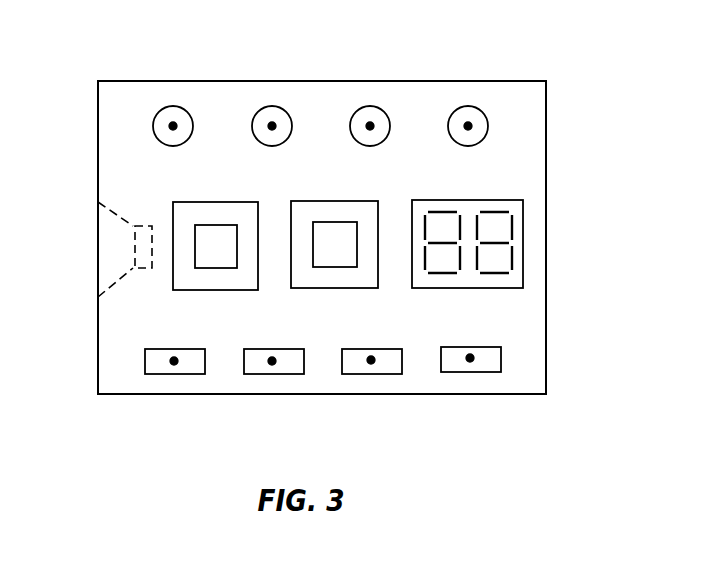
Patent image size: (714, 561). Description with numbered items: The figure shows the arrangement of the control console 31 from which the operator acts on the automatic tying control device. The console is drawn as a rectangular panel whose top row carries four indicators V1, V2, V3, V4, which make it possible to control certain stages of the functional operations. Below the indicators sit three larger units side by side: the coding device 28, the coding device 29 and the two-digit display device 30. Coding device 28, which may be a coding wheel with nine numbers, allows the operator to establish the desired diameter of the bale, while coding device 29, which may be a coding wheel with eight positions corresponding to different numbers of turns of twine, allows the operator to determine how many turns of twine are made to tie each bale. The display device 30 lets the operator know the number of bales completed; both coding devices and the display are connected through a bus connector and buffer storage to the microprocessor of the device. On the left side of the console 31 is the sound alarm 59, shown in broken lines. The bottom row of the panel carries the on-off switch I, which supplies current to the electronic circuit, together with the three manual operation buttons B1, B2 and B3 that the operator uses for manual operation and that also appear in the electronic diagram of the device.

The control console 31 is at (532, 63).
The sound alarm 59 is at (108, 228).
The coding device 28 is at (237, 204).
The coding device 29 is at (343, 208).
The two-digit display device 30 is at (504, 205).
The indicator V1 is at (173, 126).
The indicator V2 is at (272, 126).
The indicator V3 is at (370, 126).
The indicator V4 is at (468, 126).
The on-off switch I is at (174, 361).
The manual operation button B1 is at (272, 361).
The manual operation button B2 is at (371, 360).
The manual operation button B3 is at (470, 358).